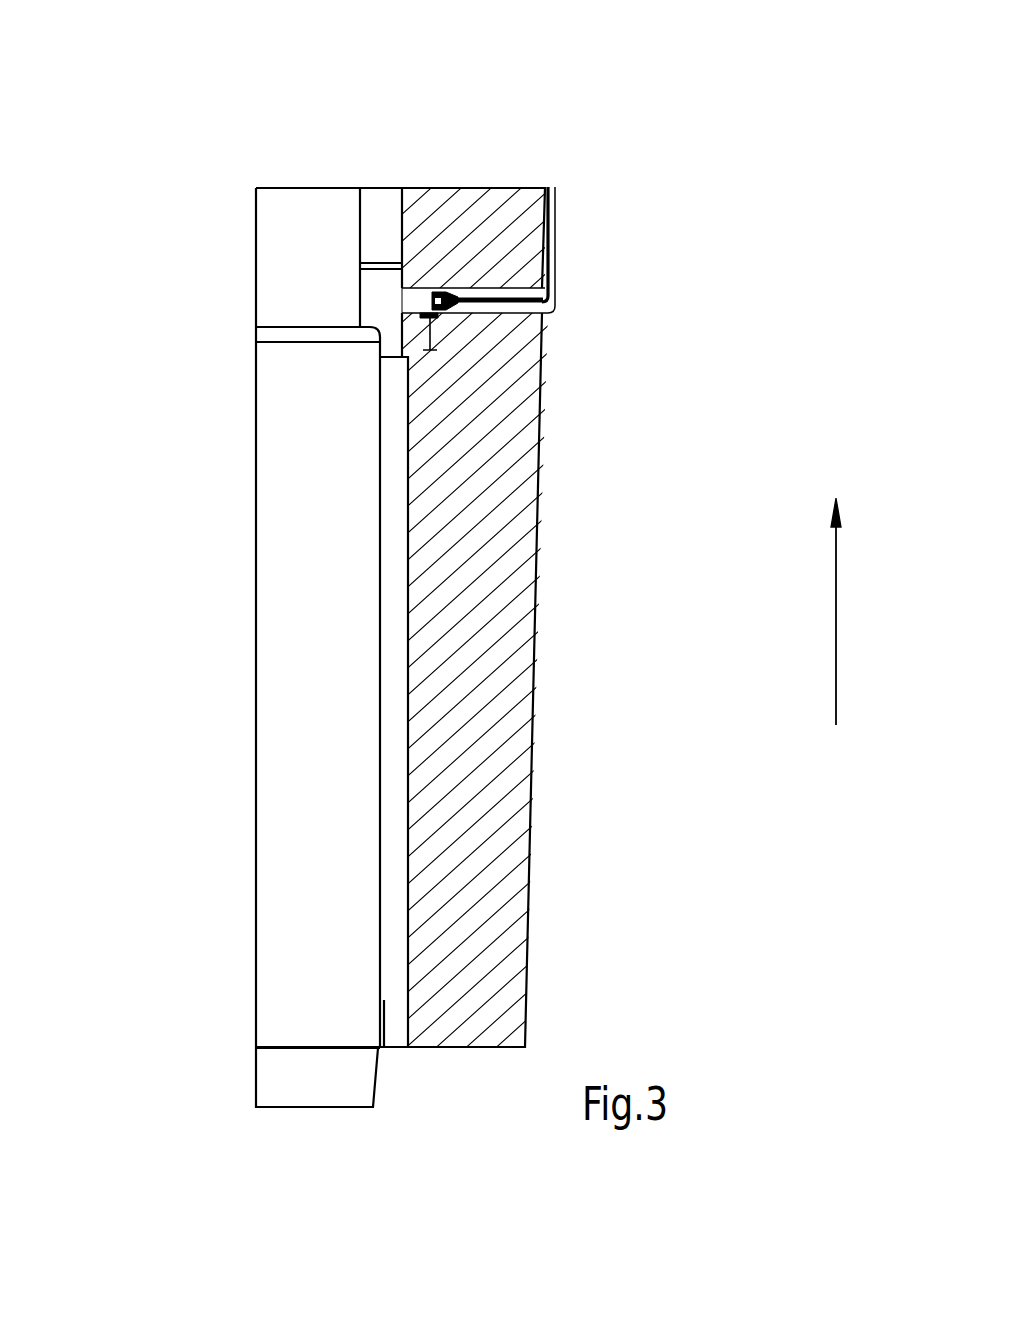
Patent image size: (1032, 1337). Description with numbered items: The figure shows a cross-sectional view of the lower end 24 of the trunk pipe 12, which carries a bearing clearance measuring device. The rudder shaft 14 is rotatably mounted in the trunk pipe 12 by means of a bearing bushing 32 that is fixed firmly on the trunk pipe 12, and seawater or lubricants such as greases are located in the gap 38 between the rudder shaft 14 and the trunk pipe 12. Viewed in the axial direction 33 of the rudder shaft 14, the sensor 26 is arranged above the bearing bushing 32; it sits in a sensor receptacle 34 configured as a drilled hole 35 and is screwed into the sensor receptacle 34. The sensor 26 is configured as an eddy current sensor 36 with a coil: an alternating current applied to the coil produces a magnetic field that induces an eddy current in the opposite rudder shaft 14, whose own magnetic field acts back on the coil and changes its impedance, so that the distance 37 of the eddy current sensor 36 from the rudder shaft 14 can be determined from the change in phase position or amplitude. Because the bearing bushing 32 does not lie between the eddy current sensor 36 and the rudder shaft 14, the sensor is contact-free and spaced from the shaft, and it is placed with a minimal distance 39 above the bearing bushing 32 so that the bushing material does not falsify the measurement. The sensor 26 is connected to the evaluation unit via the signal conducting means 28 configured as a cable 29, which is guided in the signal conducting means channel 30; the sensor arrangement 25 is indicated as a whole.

The trunk pipe 12 is at (540, 518).
The rudder shaft 14 is at (283, 503).
The lower end 24 is at (558, 646).
The sensor arrangement 25 is at (584, 281).
The sensor 26 is at (423, 275).
The signal conducting means 28 is at (510, 306).
The cable 29 is at (546, 303).
The signal conducting means channel 30 is at (558, 248).
The bearing bushing 32 is at (397, 1007).
The axial direction 33 is at (837, 610).
The sensor receptacle 34 is at (491, 272).
The drilled hole 35 is at (517, 272).
The eddy current sensor 36 is at (402, 267).
The distance 37 is at (383, 255).
The gap 38 is at (375, 304).
The minimal distance 39 is at (432, 333).